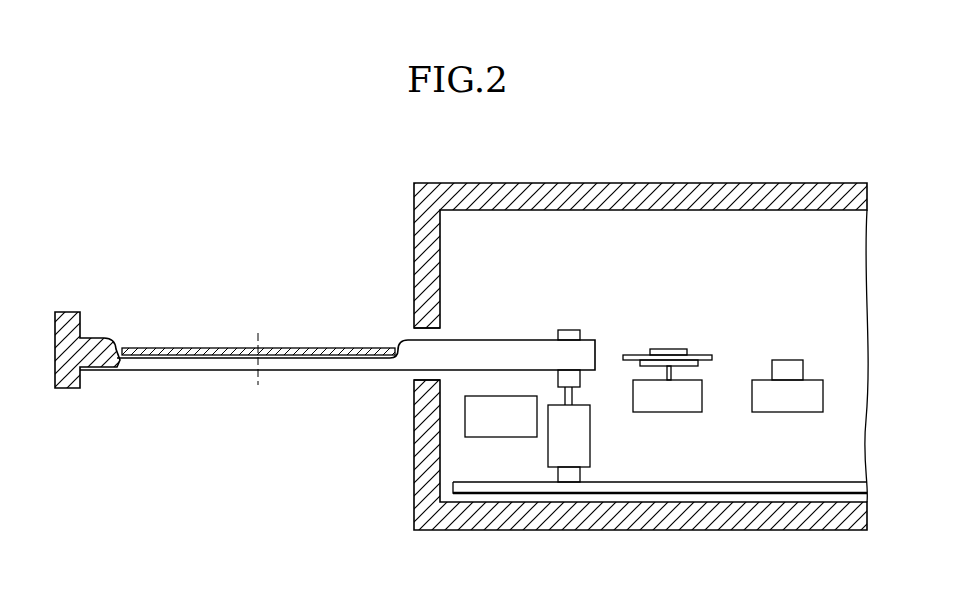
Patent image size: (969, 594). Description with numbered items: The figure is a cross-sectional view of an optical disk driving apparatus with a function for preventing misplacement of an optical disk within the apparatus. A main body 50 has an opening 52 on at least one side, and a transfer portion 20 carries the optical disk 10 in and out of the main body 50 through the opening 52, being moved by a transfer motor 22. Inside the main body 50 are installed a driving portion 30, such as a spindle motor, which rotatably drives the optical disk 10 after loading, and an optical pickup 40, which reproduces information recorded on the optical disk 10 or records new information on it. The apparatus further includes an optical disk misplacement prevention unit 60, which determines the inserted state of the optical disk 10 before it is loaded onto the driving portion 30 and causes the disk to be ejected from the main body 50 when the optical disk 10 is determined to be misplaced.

The optical disk 10 is at (194, 344).
The transfer portion 20 is at (297, 374).
The transfer motor 22 is at (571, 331).
The driving portion 30 is at (708, 342).
The optical pickup 40 is at (800, 349).
The main body 50 is at (621, 182).
The opening 52 is at (412, 376).
The optical disk misplacement prevention unit 60 is at (463, 427).